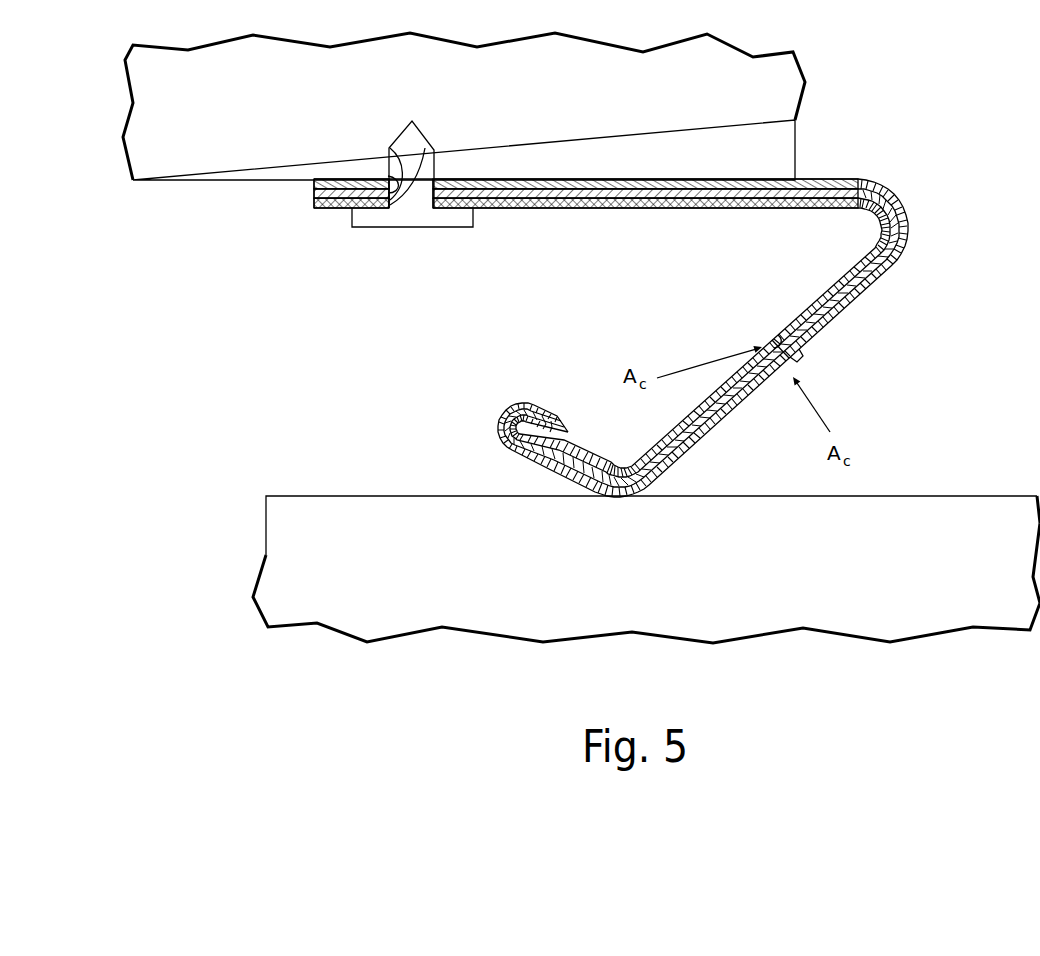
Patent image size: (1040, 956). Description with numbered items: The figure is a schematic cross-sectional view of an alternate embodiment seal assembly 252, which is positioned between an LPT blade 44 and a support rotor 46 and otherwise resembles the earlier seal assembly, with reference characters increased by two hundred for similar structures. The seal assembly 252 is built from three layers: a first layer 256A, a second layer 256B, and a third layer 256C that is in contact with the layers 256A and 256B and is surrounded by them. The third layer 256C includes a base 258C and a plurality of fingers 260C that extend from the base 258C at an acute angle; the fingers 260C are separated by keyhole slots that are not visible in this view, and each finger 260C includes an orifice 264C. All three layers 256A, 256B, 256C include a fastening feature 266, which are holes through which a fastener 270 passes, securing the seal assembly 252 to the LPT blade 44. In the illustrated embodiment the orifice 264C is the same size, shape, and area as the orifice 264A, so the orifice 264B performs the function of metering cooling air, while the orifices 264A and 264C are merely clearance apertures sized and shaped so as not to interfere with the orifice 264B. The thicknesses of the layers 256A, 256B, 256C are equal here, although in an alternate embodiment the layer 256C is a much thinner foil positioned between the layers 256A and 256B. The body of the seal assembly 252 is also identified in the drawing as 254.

The LPT blade 44 is at (797, 145).
The support rotor 46 is at (918, 496).
The seal assembly 252 is at (664, 299).
The clip body 254 is at (780, 334).
The first layer 256A is at (690, 171).
The second layer 256B is at (721, 207).
The third layer 256C is at (646, 217).
The base 258C is at (573, 210).
The fingers 260C is at (826, 299).
The orifice 264A is at (797, 360).
The orifice 264B is at (787, 364).
The orifice 264C is at (777, 342).
The fastening feature 266 is at (387, 177).
The fastener 270 is at (436, 150).